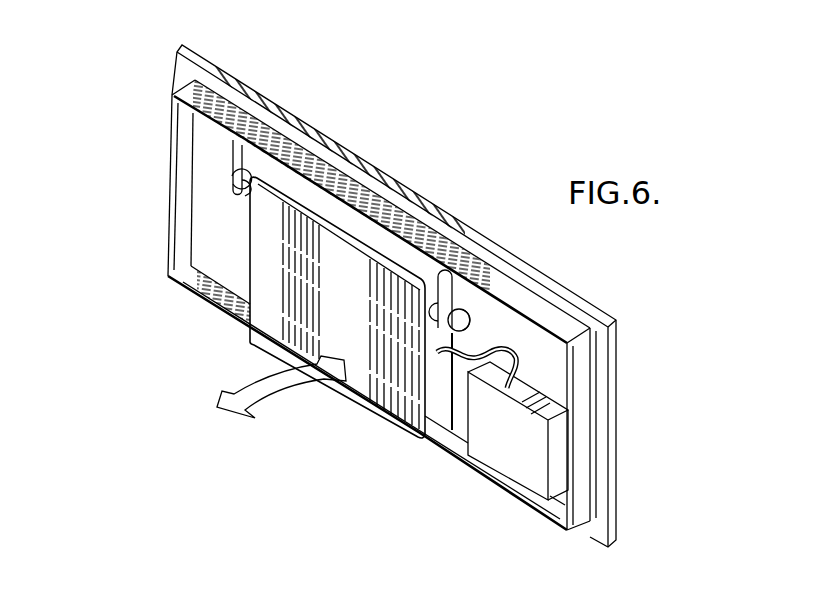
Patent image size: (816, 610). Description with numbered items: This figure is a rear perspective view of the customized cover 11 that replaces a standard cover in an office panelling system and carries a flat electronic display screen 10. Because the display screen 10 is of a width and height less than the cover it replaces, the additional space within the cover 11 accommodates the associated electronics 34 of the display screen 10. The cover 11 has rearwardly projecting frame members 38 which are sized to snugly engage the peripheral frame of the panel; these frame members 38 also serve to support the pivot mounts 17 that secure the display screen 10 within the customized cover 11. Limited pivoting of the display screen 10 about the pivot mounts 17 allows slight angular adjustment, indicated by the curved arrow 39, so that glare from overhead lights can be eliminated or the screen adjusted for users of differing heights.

The electronic display screen 10 is at (280, 318).
The customized cover 11 is at (418, 193).
The pivot mounts 17 is at (238, 192).
The associated electronics 34 is at (497, 443).
The rearwardly projecting frame members 38 is at (184, 190).
The arrow indicating direction of movement 39 is at (287, 393).